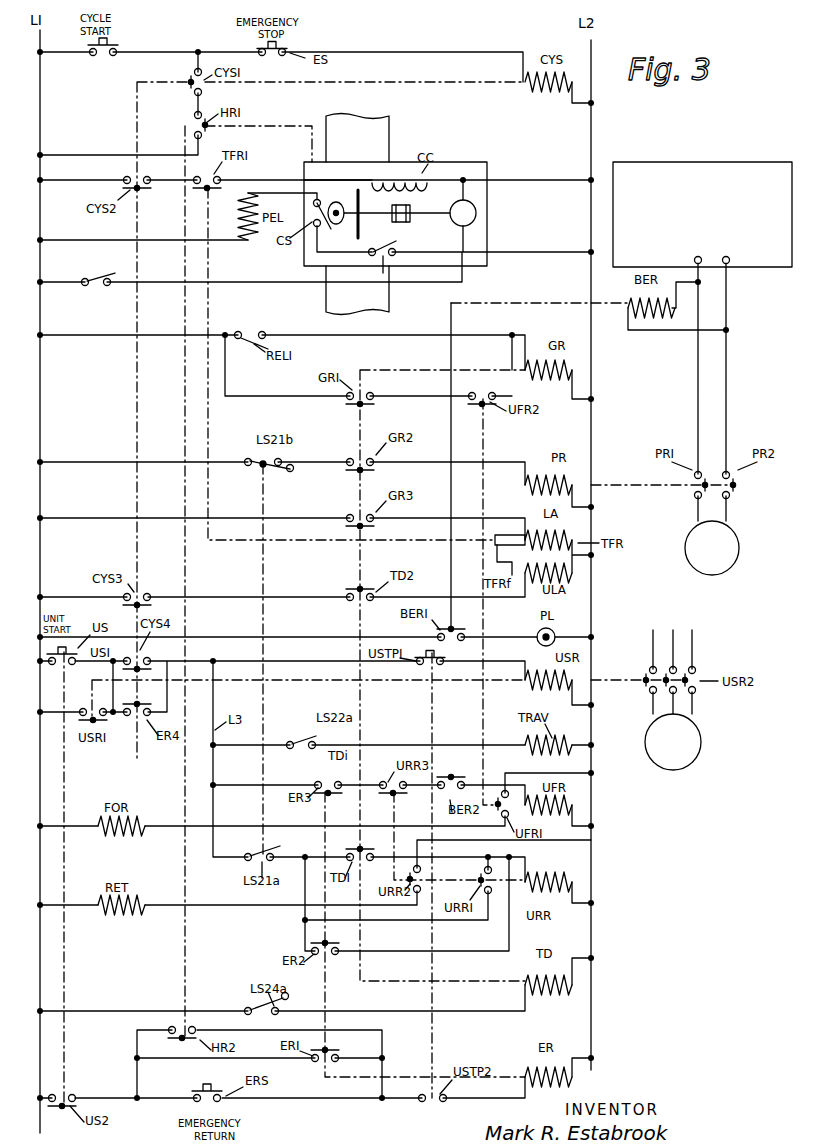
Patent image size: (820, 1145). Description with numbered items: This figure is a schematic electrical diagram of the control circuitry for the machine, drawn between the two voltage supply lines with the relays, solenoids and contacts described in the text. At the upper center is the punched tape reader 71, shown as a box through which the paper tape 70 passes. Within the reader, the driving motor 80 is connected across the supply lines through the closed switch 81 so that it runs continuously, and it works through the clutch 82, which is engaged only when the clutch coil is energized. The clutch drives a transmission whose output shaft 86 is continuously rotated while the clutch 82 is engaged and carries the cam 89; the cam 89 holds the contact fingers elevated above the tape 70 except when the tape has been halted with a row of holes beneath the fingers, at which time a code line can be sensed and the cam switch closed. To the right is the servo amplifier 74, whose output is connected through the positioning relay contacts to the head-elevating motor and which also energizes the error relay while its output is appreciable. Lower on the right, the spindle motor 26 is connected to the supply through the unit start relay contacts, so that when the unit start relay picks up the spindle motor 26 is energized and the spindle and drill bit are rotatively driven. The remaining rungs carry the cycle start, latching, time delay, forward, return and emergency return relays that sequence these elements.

The paper tape 70 is at (389, 136).
The punched tape reader 71 is at (468, 160).
The servo amplifier 74 is at (735, 161).
The driving motor 80 is at (477, 213).
The switch 81 is at (91, 288).
The clutch 82 is at (410, 223).
The output shaft 86 is at (371, 187).
The cam 89 is at (343, 198).
The spindle motor 26 is at (700, 748).